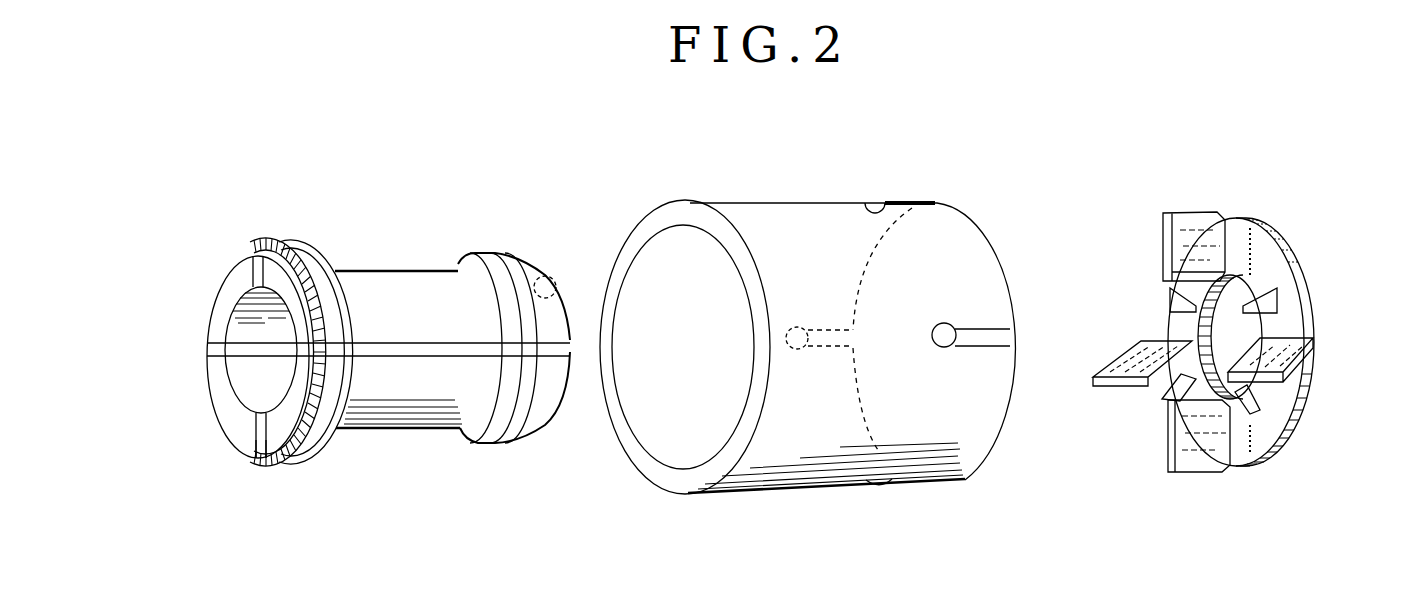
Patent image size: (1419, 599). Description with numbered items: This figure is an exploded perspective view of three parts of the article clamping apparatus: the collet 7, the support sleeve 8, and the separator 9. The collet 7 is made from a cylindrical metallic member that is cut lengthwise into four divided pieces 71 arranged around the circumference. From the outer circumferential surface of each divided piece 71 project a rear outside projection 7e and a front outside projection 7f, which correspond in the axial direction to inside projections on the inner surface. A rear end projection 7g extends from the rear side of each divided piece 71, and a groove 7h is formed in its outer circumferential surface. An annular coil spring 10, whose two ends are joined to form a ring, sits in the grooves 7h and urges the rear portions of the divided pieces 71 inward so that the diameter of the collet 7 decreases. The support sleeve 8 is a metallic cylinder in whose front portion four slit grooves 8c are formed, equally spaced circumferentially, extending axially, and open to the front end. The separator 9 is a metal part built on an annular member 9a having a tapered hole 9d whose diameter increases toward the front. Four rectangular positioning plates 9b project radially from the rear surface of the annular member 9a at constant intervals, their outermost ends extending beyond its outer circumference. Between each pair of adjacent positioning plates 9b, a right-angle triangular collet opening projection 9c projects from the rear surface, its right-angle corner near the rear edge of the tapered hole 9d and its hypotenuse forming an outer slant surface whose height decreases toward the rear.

The collet 7 is at (381, 268).
The divided piece 71 is at (217, 305).
The rear outside projection 7e is at (330, 433).
The front outside projection 7f is at (502, 447).
The rear end projection 7g is at (283, 417).
The groove 7h is at (302, 467).
The annular coil spring 10 is at (280, 458).
The support sleeve 8 is at (763, 201).
The slit grooves 8c is at (910, 205).
The separator 9 is at (1238, 216).
The annular member 9a is at (1280, 240).
The positioning plates 9b is at (1193, 223).
The collet opening projections 9c is at (1195, 307).
The tapered hole 9d is at (1208, 339).